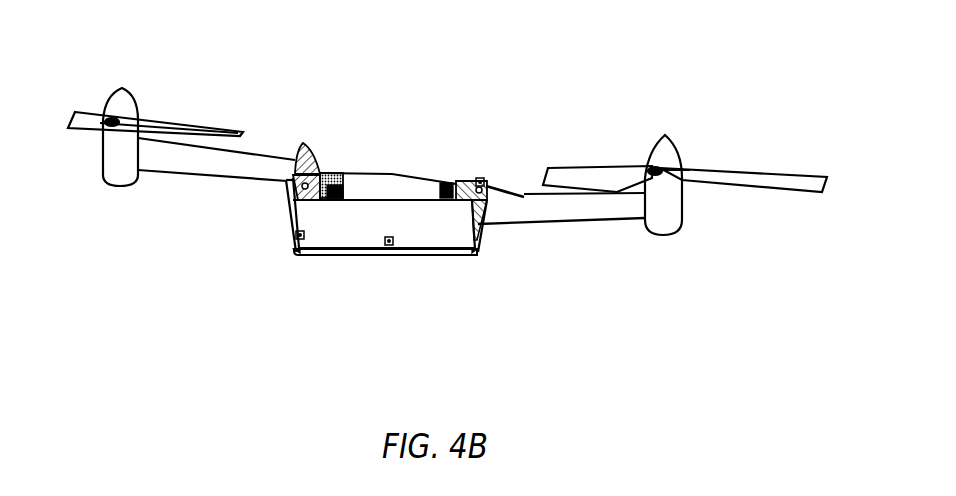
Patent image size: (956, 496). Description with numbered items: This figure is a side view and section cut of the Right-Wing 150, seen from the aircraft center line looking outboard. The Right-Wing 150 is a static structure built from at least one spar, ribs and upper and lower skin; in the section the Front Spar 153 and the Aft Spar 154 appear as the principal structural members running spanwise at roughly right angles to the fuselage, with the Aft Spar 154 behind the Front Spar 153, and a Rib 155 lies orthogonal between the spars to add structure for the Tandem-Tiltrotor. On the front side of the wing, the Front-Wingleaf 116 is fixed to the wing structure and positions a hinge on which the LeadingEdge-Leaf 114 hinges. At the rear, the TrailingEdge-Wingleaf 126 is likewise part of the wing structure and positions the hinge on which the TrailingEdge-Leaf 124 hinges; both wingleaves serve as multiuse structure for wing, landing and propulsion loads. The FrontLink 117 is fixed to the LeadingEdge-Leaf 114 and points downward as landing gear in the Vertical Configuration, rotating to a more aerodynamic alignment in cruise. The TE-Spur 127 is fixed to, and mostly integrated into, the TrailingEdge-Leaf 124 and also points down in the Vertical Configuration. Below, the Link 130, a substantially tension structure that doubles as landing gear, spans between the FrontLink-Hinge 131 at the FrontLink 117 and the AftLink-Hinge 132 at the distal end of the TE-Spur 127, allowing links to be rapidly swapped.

The LeadingEdge-Leaf 114 is at (304, 146).
The Front-Wingleaf 116 is at (322, 172).
The FrontLink 117 is at (283, 208).
The TrailingEdge-Leaf 124 is at (484, 212).
The TrailingEdge-Wingleaf 126 is at (477, 181).
The TE-Spur 127 is at (480, 238).
The Link 130 is at (409, 253).
The FrontLink-Hinge 131 is at (290, 255).
The AftLink-Hinge 132 is at (477, 255).
The Right-Wing 150 is at (500, 189).
The Front Spar 153 is at (340, 173).
The Aft Spar 154 is at (453, 183).
The Rib 155 is at (392, 185).